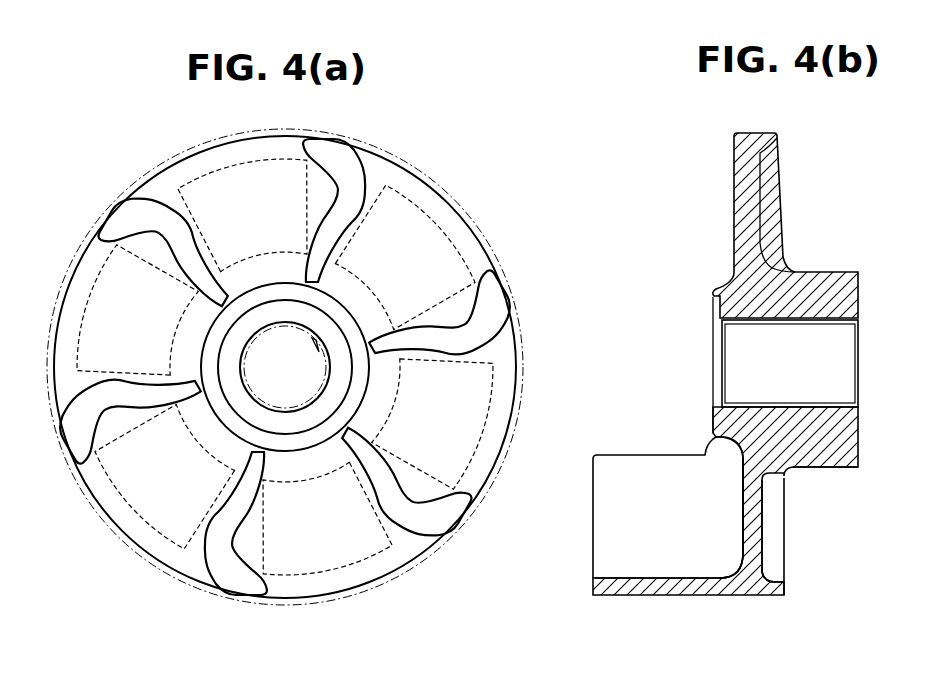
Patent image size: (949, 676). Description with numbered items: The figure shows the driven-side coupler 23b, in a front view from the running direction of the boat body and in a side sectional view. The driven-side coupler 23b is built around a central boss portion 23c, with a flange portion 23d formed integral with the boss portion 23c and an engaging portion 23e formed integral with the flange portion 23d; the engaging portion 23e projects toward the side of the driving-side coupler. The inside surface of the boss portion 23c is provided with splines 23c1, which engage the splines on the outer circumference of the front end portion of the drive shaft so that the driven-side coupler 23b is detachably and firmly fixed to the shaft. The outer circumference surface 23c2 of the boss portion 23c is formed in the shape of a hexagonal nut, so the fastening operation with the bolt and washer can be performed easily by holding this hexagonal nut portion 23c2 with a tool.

In FIG. 4B, the driven-side coupler 23b is at (797, 185).
In FIG. 4B, the boss portion 23c is at (846, 451).
In FIG. 4A, the splines 23c1 is at (320, 343).
In FIG. 4B, the splines 23c1 is at (820, 402).
In FIG. 4B, the outer circumference surface 23c2 is at (837, 469).
In FIG. 4A, the flange portion 23d is at (508, 257).
In FIG. 4B, the flange portion 23d is at (755, 528).
In FIG. 4A, the engaging portion 23e is at (452, 323).
In FIG. 4B, the engaging portion 23e is at (628, 500).